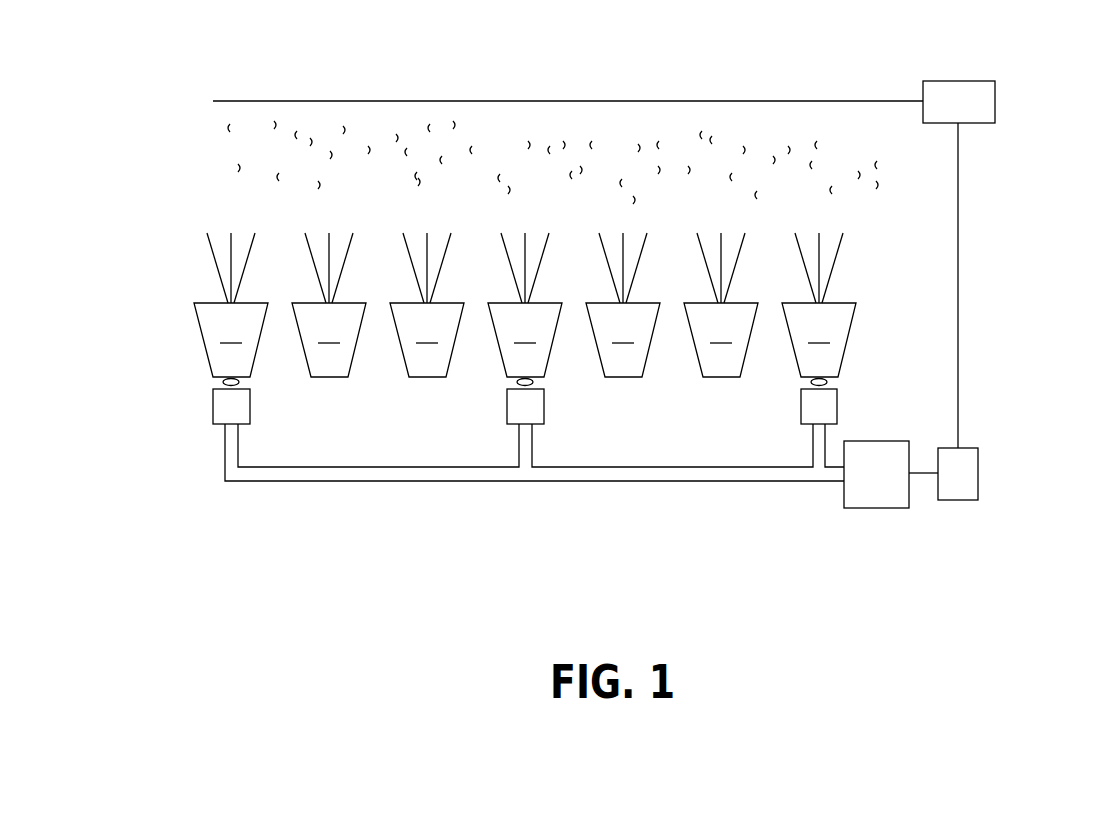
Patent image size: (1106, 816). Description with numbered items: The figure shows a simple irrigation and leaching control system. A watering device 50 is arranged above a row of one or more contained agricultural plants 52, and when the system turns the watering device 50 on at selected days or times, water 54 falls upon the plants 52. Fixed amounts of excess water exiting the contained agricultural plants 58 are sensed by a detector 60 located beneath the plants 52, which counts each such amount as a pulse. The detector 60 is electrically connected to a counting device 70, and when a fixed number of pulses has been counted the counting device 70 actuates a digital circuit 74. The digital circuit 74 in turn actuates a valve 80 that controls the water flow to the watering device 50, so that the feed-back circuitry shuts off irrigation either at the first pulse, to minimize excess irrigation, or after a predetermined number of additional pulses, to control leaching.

The watering device 50 is at (513, 101).
The contained agricultural plants 52 is at (525, 305).
The water 54 is at (600, 175).
The water exiting the contained agricultural plants 58 is at (223, 382).
The detector 60 is at (213, 405).
The counting device 70 is at (866, 487).
The digital circuit 74 is at (968, 475).
The valve 80 is at (980, 101).